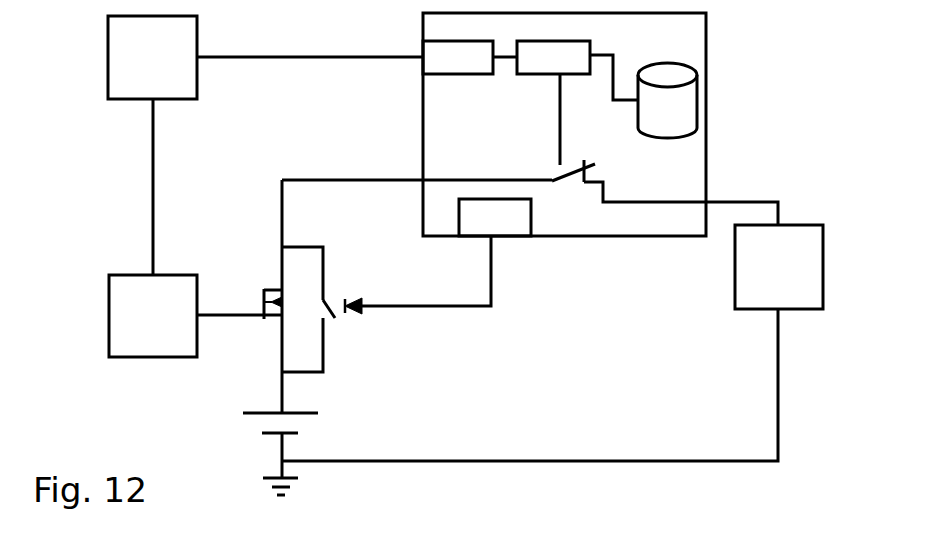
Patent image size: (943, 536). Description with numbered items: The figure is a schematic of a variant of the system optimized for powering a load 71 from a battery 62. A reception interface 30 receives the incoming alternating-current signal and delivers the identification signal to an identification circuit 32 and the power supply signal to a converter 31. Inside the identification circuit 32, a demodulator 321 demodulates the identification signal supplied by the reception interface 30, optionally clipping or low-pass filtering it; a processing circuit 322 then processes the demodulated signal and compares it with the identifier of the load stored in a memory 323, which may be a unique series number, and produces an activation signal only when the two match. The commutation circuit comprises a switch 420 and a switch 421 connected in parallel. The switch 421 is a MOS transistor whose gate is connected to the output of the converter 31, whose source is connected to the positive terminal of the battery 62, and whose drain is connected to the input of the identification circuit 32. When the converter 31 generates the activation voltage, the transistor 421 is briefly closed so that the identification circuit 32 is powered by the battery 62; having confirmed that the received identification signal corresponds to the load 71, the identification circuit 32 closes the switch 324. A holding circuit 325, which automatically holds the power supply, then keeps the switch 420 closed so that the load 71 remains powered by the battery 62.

The reception interface 30 is at (136, 72).
The converter 31 is at (136, 331).
The identification circuit 32 is at (431, 142).
The demodulator 321 is at (435, 72).
The processing circuit 322 is at (530, 72).
The memory 323 is at (644, 117).
The switch 324 is at (552, 182).
The holding circuit 325 is at (472, 233).
The switch 420 is at (335, 323).
The MOS transistor 421 is at (263, 286).
The battery 62 is at (262, 433).
The load 71 is at (762, 282).